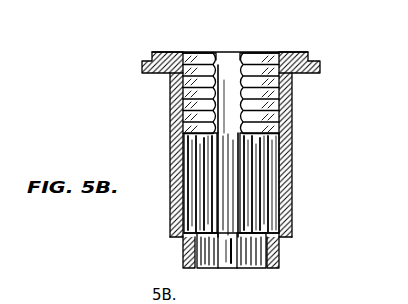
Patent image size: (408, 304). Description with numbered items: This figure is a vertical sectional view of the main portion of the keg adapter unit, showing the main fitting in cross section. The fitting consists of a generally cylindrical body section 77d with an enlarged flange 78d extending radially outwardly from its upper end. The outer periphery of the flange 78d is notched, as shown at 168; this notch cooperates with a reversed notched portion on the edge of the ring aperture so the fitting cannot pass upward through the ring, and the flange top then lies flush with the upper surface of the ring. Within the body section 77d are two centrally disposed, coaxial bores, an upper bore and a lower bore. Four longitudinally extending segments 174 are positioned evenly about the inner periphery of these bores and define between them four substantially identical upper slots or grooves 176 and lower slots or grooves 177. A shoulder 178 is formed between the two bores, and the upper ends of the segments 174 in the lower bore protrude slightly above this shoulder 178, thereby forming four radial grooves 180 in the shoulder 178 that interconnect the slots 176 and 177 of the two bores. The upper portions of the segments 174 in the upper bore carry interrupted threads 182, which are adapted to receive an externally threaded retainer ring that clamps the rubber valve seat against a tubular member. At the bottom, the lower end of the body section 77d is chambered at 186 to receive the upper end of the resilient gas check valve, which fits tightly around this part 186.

The notched outer periphery of the flange 168 is at (235, 152).
The enlarged flange 78d is at (158, 63).
The cylindrical body section 77d is at (170, 143).
The longitudinally extending segments 174 is at (203, 64).
The upper slots or grooves 176 is at (227, 68).
The interrupted threads 182 is at (257, 82).
The shoulder 178 is at (210, 235).
The radial grooves 180 is at (228, 237).
The lower slots or grooves 177 is at (229, 258).
The chambered lower end 186 is at (282, 246).